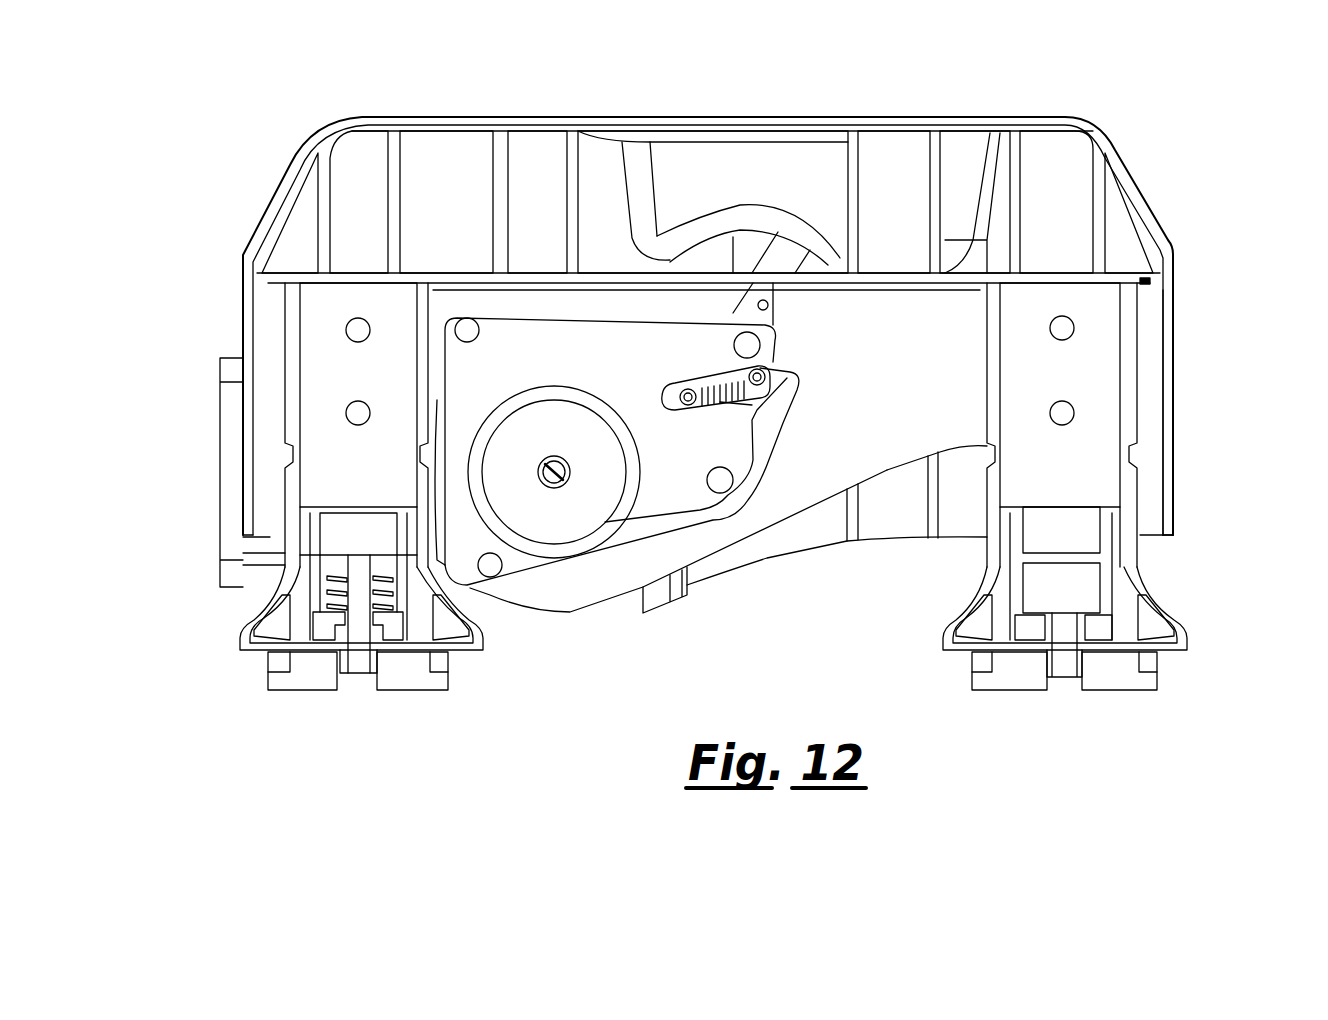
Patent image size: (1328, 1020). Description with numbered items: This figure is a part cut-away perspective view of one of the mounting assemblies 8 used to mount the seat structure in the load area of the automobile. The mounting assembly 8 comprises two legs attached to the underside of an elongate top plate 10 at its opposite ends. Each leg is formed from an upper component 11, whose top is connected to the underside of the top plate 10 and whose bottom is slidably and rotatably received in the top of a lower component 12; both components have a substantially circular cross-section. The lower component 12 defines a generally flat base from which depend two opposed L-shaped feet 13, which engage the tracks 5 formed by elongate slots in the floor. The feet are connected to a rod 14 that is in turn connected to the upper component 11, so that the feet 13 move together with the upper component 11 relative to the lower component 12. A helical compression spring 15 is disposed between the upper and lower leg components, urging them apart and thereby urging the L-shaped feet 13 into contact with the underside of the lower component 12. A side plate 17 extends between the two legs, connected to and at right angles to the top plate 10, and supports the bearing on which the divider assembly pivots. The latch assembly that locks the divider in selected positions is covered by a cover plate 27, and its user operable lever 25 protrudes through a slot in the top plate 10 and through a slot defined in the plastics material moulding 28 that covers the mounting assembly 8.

The mounting assembly 8 is at (278, 148).
The plastics material moulding 28 is at (520, 140).
The user operable lever 25 is at (758, 268).
The top plate 10 is at (1142, 282).
The upper component 11 is at (287, 338).
The lower component 12 is at (245, 607).
The track 5 is at (268, 660).
The L-shaped feet 13 is at (290, 690).
The rod 14 is at (360, 675).
The helical compression spring 15 is at (405, 633).
The cover plate 27 is at (520, 568).
The side plate 17 is at (813, 492).